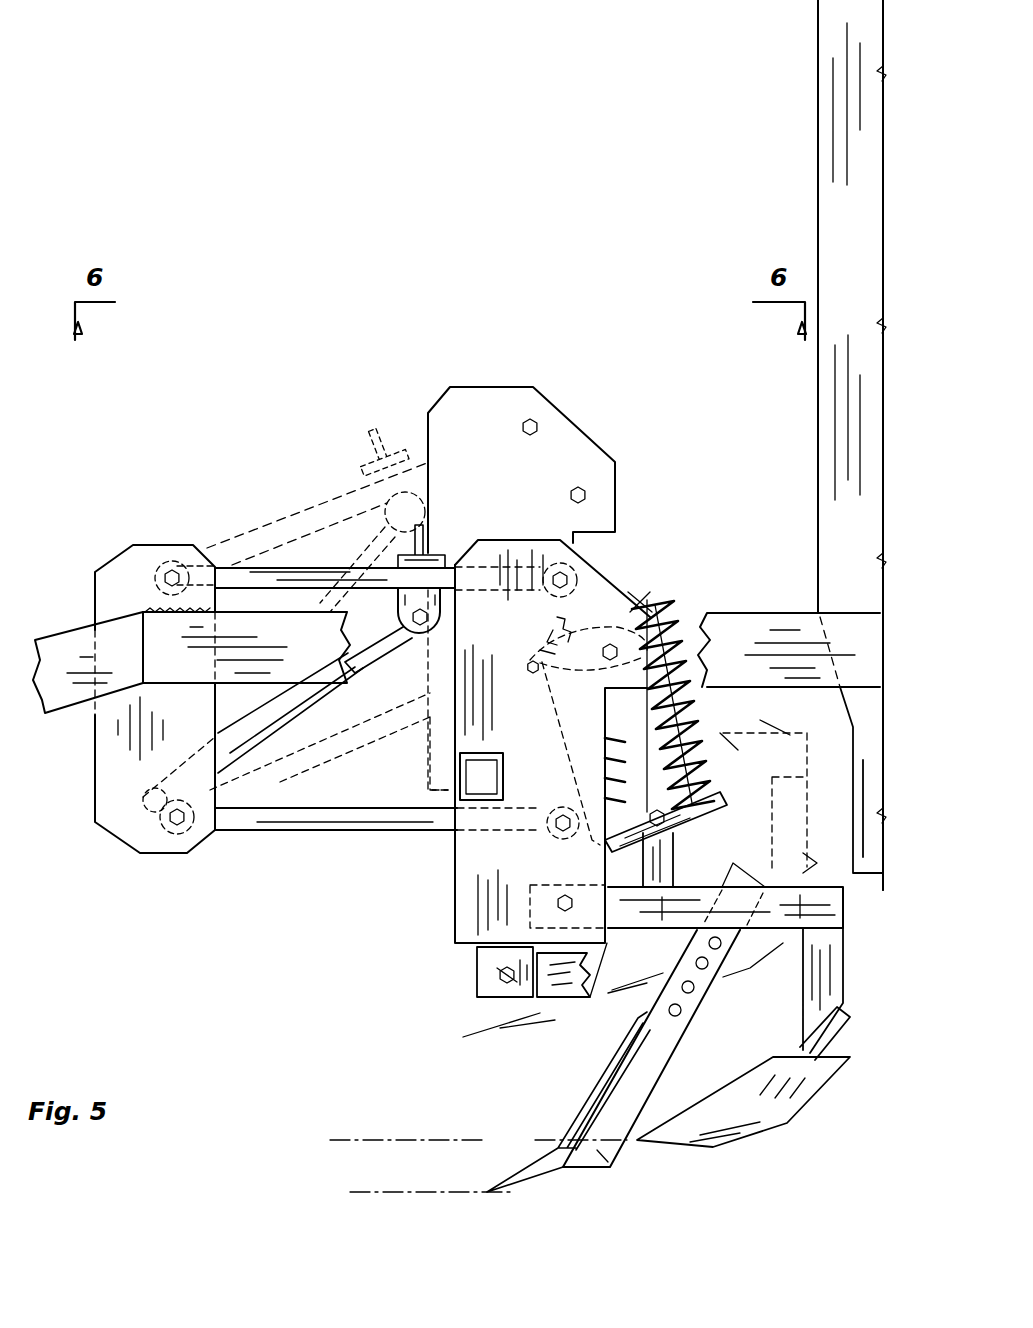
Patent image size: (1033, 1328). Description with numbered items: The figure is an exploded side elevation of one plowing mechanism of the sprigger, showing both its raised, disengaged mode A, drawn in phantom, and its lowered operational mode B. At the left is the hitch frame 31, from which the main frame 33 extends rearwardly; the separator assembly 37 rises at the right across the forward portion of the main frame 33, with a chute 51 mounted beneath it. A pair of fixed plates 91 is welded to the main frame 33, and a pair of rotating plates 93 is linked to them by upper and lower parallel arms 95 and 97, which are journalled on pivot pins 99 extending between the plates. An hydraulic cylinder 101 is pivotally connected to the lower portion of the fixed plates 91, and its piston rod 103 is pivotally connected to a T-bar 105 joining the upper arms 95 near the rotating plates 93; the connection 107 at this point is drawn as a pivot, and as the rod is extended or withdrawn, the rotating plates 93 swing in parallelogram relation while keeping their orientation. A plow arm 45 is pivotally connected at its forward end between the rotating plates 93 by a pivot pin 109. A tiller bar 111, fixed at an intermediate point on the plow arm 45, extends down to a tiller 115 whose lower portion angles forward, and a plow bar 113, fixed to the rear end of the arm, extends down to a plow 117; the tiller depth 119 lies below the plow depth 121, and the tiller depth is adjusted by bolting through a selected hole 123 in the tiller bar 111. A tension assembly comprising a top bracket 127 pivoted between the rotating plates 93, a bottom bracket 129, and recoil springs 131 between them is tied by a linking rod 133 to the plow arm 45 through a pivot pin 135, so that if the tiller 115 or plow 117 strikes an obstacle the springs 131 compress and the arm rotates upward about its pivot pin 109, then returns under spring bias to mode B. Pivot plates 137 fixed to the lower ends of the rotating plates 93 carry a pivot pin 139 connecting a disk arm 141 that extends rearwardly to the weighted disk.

The hitch frame 31 is at (63, 650).
The main frame 33 is at (740, 625).
The separator assembly 37 is at (833, 58).
The plow arm 45 is at (617, 907).
The chute 51 is at (867, 752).
The fixed plates 91 is at (115, 573).
The rotating plates 93 is at (592, 594).
The upper arm 95 is at (292, 577).
The lower arm 97 is at (292, 824).
The pivot pin 99 is at (172, 578).
The hydraulic cylinder 101 is at (288, 708).
The piston rod 103 is at (380, 642).
The T-bar 105 is at (433, 542).
The clevis pivot 107 is at (432, 636).
The pivot pin 109 is at (565, 907).
The tiller bar 111 is at (612, 1167).
The plow bar 113 is at (827, 967).
The tiller 115 is at (525, 1165).
The plow 117 is at (743, 1112).
The tiller depth 119 is at (432, 1196).
The plow depth 121 is at (423, 1140).
The hole 123 is at (697, 987).
The top bracket 127 is at (640, 608).
The bottom bracket 129 is at (703, 815).
The recoil spring 131 is at (603, 745).
The linking rod 133 is at (668, 882).
The pivot pin 135 is at (600, 652).
The pivot plate 137 is at (483, 985).
The pivot pin 139 is at (510, 985).
The disk arm 141 is at (557, 993).
The disengaged mode A is at (577, 442).
The operational mode B is at (455, 845).